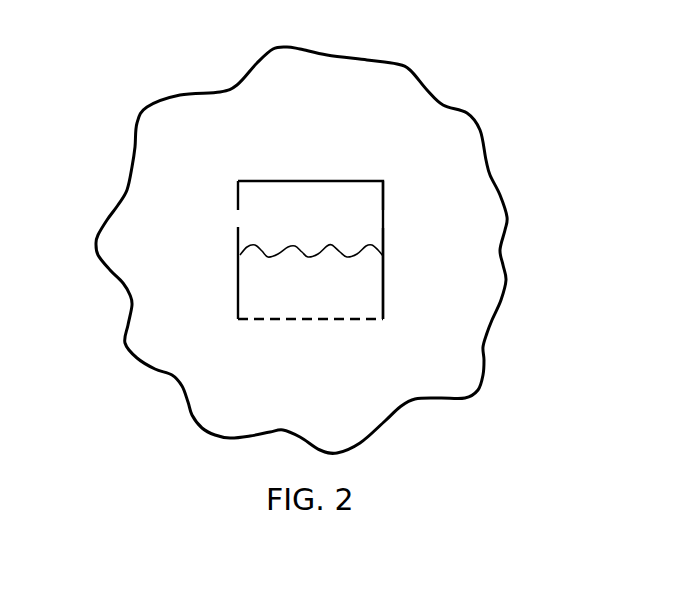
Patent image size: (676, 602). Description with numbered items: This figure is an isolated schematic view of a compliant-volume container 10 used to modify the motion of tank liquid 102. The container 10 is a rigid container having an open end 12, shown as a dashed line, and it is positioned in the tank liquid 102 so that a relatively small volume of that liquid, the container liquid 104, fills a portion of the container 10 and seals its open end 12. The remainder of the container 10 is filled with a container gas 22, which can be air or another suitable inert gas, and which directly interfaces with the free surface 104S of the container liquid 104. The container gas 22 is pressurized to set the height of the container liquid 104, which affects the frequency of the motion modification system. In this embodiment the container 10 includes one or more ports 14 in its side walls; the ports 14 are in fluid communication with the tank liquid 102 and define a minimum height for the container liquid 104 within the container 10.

The container 10 is at (383, 195).
The open end 12 is at (342, 319).
The ports 14 is at (237, 218).
The container gas 22 is at (322, 222).
The tank liquid 102 is at (473, 262).
The container liquid 104 is at (352, 295).
The free surface 104S is at (346, 256).